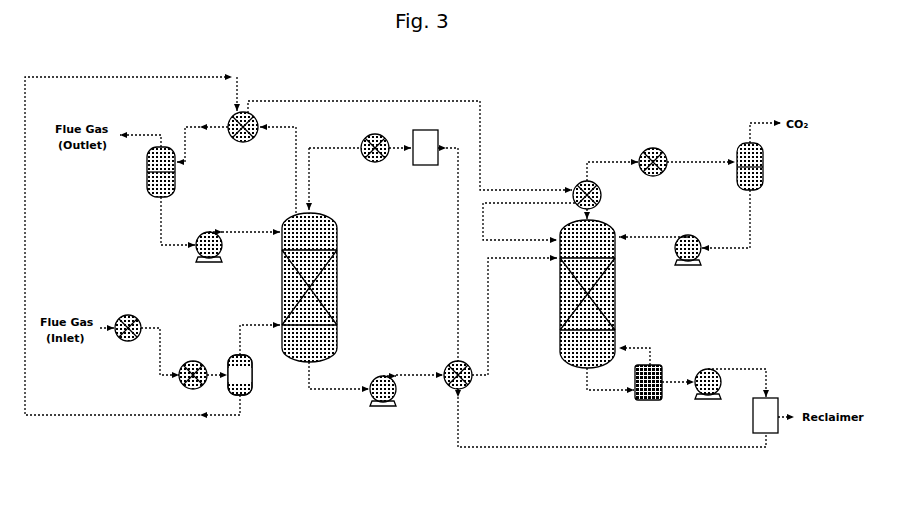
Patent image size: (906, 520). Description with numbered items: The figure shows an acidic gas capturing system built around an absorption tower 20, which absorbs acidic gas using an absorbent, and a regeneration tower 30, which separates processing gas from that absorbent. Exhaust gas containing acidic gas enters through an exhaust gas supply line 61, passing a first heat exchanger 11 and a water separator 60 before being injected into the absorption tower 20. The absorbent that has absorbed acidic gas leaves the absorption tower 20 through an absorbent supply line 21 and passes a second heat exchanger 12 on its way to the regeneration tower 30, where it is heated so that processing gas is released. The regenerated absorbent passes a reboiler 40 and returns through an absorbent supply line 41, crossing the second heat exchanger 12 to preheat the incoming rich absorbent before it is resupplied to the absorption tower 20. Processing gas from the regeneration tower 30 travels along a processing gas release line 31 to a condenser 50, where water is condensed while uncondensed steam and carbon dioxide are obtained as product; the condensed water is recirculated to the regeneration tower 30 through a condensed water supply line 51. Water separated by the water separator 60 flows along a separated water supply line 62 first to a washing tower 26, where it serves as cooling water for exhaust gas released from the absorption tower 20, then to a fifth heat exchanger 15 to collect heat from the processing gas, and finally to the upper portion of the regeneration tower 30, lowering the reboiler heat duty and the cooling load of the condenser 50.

The first heat exchanger 11 is at (178, 385).
The second heat exchanger 12 is at (446, 387).
The fifth heat exchanger 15 is at (603, 200).
The absorption tower 20 is at (312, 283).
The absorbent supply line 21 is at (412, 372).
The washing tower 26 is at (248, 112).
The regeneration tower 30 is at (615, 283).
The processing gas release line 31 is at (614, 158).
The reboiler 40 is at (632, 401).
The absorbent supply line 41 is at (515, 449).
The condenser 50 is at (763, 172).
The condensed water supply line 51 is at (752, 232).
The water separator 60 is at (252, 388).
The exhaust gas supply line 61 is at (237, 325).
The separated water supply line 62 is at (50, 415).